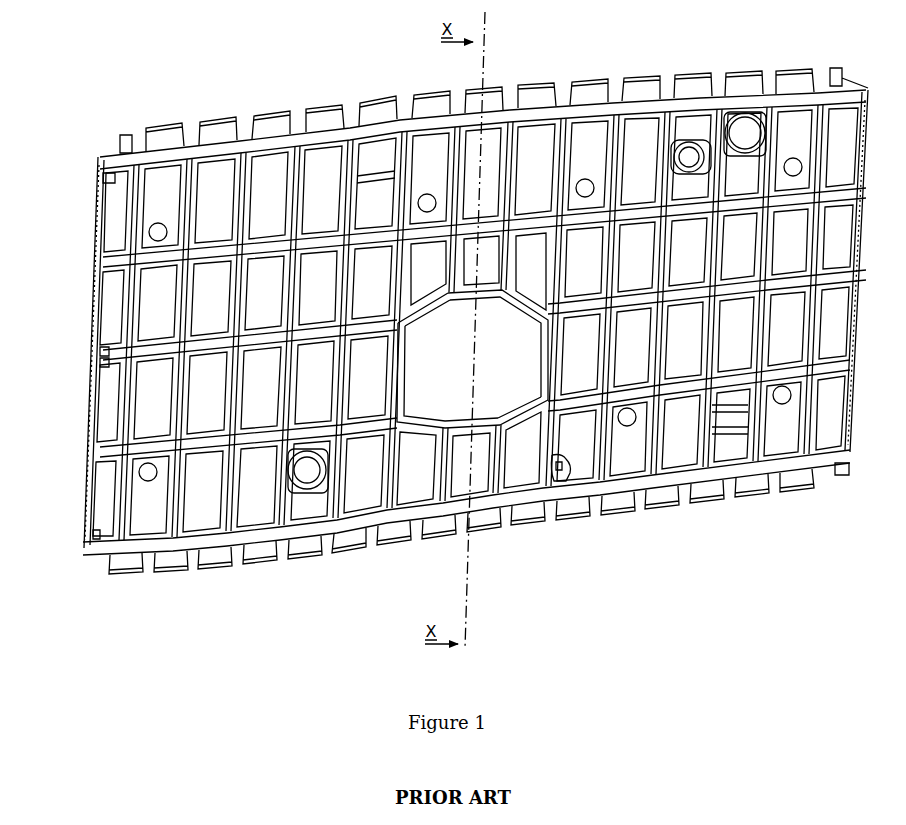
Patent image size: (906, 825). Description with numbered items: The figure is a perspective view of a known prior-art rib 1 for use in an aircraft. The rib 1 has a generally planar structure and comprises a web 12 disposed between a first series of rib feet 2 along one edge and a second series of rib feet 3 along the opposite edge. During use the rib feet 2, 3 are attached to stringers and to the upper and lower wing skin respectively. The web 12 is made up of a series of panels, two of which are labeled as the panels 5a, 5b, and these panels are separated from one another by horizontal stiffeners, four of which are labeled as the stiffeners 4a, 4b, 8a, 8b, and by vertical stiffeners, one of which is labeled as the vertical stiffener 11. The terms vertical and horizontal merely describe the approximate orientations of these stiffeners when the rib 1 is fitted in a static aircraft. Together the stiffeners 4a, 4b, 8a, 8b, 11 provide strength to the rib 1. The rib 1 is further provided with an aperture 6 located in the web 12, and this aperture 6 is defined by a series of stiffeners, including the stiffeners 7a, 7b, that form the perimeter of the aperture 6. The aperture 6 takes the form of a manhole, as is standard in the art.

The rib 1 is at (128, 108).
The first series of rib feet 2 is at (303, 112).
The second series of rib feet 3 is at (347, 550).
The horizontal stiffener 4a is at (435, 120).
The horizontal stiffener 4b is at (513, 503).
The panel 5a is at (493, 143).
The panel 5b is at (448, 487).
The aperture 6 is at (441, 378).
The stiffener 7a is at (420, 303).
The stiffener 7b is at (523, 410).
The horizontal stiffener 8a is at (328, 233).
The horizontal stiffener 8b is at (327, 418).
The vertical stiffener 11 is at (813, 413).
The web 12 is at (88, 167).